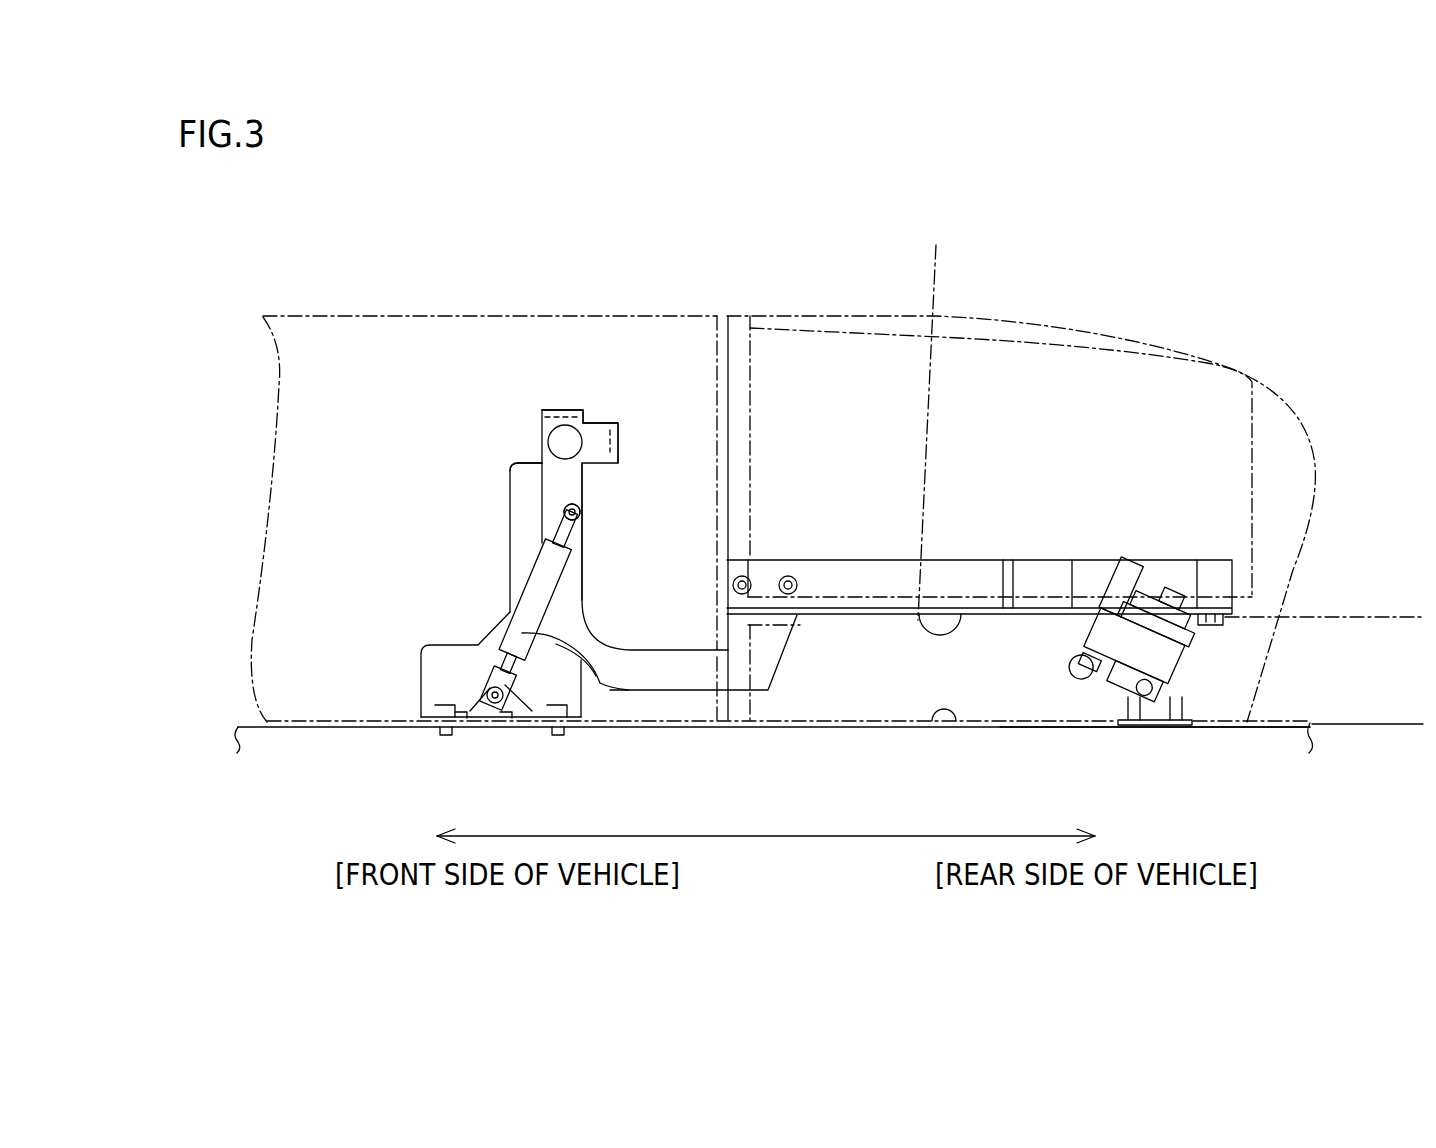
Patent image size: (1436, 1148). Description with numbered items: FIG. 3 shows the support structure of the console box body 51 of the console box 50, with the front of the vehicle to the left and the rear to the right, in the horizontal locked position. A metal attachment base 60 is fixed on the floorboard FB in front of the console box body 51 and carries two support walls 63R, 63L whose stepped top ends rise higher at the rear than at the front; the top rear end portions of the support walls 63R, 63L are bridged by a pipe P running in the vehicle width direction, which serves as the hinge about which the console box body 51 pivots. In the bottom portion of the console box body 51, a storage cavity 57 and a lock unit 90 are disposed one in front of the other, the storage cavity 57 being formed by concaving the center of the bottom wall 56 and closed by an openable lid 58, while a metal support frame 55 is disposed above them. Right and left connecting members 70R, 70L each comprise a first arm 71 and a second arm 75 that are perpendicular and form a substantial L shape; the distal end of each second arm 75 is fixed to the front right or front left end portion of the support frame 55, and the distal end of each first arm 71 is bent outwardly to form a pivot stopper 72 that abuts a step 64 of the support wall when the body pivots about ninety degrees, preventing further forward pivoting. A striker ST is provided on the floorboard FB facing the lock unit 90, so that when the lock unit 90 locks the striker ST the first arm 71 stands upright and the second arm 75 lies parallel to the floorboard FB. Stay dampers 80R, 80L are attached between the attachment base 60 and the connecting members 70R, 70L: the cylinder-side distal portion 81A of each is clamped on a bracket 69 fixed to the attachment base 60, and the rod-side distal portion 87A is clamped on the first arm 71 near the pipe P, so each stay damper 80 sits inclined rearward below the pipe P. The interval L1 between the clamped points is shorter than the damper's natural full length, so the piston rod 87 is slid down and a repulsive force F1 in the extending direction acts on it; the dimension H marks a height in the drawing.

The console box 50 is at (1028, 312).
The console box body 51 is at (783, 452).
The support frame 55 is at (1153, 570).
The bottom wall 56 is at (1082, 735).
The storage cavity 57 is at (939, 416).
The openable lid 58 is at (950, 727).
The attachment base 60 is at (483, 592).
The right support wall 63R is at (429, 724).
The left support wall 63L is at (427, 687).
The step 64 is at (528, 462).
The bracket 69 is at (487, 707).
The right connecting member 70R is at (595, 441).
The left connecting member 70L is at (595, 441).
The first arm 71 is at (590, 492).
The pivot stopper 72 is at (555, 410).
The second arm 75 is at (690, 675).
The stay damper 80 is at (521, 641).
The right stay damper 80R is at (521, 641).
The left stay damper 80L is at (521, 641).
The cylinder-side distal portion 81A is at (490, 688).
The piston rod 87 is at (560, 537).
The rod-side distal portion 87A is at (585, 502).
The lock unit 90 is at (1203, 643).
The pipe P is at (566, 442).
The repulsive force F1 is at (615, 504).
The interval L1 is at (462, 573).
The height H is at (1390, 659).
The floorboard FB is at (219, 706).
The striker ST is at (1203, 756).